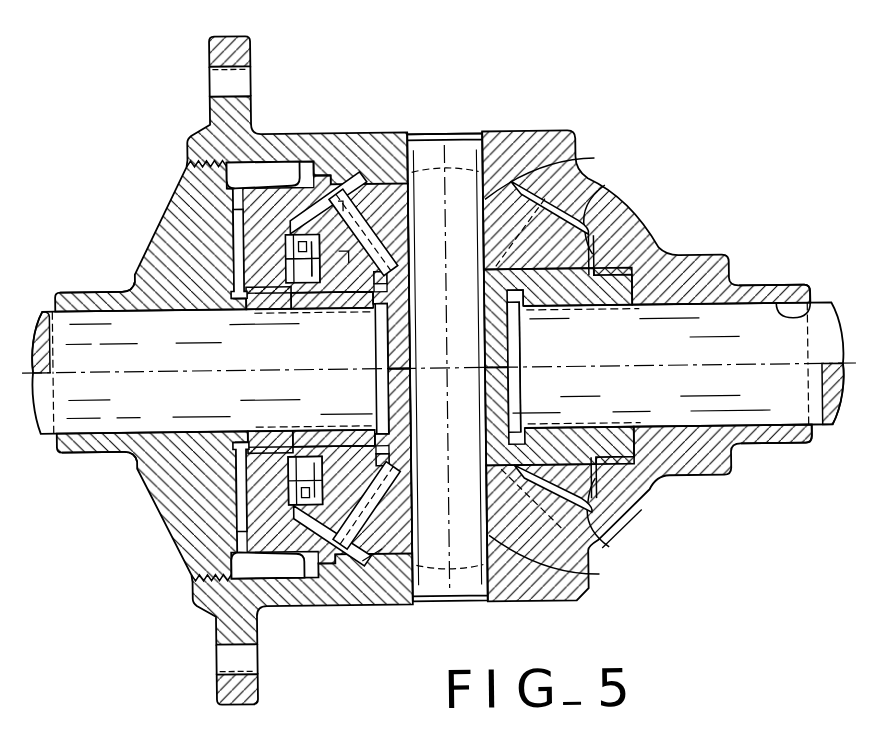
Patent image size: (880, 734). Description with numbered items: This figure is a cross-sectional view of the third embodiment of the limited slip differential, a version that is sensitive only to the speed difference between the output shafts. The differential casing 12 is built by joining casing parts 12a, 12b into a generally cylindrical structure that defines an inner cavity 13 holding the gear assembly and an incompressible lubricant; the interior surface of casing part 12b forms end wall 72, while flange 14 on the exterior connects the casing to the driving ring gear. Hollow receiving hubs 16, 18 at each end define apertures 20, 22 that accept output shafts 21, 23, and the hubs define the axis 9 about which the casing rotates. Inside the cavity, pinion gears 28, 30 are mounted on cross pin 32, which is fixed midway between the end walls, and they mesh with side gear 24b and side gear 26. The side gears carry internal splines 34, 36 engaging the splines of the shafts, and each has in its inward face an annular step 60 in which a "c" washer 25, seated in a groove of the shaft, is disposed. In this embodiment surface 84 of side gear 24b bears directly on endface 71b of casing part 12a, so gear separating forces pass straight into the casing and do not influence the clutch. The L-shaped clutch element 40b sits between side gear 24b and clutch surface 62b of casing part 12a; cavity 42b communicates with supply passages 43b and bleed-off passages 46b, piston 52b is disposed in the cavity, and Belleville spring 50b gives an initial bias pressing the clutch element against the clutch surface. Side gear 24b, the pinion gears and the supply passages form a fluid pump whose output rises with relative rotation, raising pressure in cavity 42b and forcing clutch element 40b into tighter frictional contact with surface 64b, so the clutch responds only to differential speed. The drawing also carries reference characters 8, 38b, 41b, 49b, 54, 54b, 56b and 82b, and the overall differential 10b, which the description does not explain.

The bolt 8 is at (449, 107).
The axis 9 is at (842, 368).
The differential assembly 10b is at (566, 60).
The differential casing 12 is at (702, 252).
The casing part 12a is at (188, 165).
The casing part 12b is at (563, 134).
The inner cavity 13 is at (370, 554).
The flange 14 is at (213, 44).
The hollow receiving hub 16 is at (108, 286).
The hollow receiving hub 18 is at (772, 287).
The aperture 20 is at (43, 307).
The output shaft 21 is at (41, 431).
The aperture 22 is at (813, 306).
The output shaft 23 is at (824, 431).
The side gear 24b is at (359, 446).
The "c" washer 25 is at (517, 304).
The side gear 26 is at (556, 291).
The pinion gear 28 is at (598, 162).
The pinion gear 30 is at (503, 534).
The cross pin 32 is at (475, 146).
The internal spline 34 is at (274, 308).
The internal spline 36 is at (603, 324).
The pinion gear 38b is at (325, 171).
The clutch element 40b is at (202, 197).
The lower pinion assembly 41b is at (300, 438).
The cavity 42b is at (314, 233).
The supply passages 43b is at (348, 258).
The bleed-off passages 46b is at (291, 283).
The gear hub 49b is at (348, 294).
The Belleville spring 50b is at (318, 286).
The piston 52b is at (215, 217).
The bearing cup 54 is at (609, 189).
The bearing cone 54b is at (346, 204).
The spring seat 56b is at (324, 298).
The annular step 60 is at (519, 438).
The clutch surface 62b is at (284, 198).
The surface 64b is at (322, 185).
The endface 71b is at (240, 290).
The end wall 72 is at (587, 270).
The spring washer 82b is at (286, 238).
The surface 84 is at (241, 296).